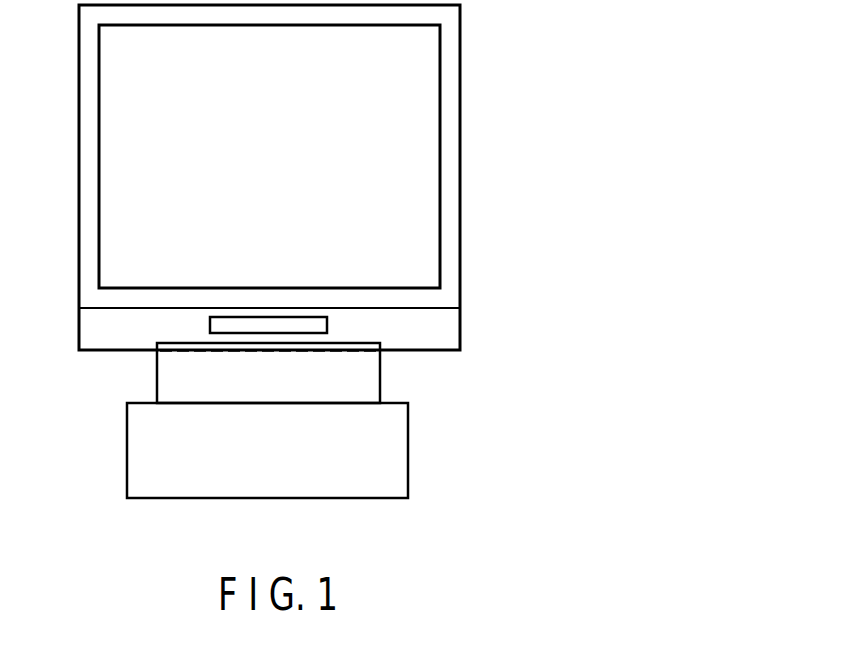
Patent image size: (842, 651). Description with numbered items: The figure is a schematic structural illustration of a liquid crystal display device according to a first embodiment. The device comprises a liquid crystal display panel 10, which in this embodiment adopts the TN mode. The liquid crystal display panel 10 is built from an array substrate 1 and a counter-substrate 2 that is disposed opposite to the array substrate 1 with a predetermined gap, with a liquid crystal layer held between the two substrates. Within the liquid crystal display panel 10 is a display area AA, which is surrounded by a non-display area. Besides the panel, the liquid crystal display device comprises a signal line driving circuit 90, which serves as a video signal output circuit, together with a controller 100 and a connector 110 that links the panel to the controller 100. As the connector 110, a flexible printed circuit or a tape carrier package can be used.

The array substrate 1 is at (81, 325).
The counter-substrate 2 is at (80, 262).
The display area AA is at (440, 97).
The liquid crystal display panel 10 is at (497, 180).
The signal line driving circuit 90 is at (210, 320).
The connector 110 is at (380, 380).
The controller 100 is at (408, 456).